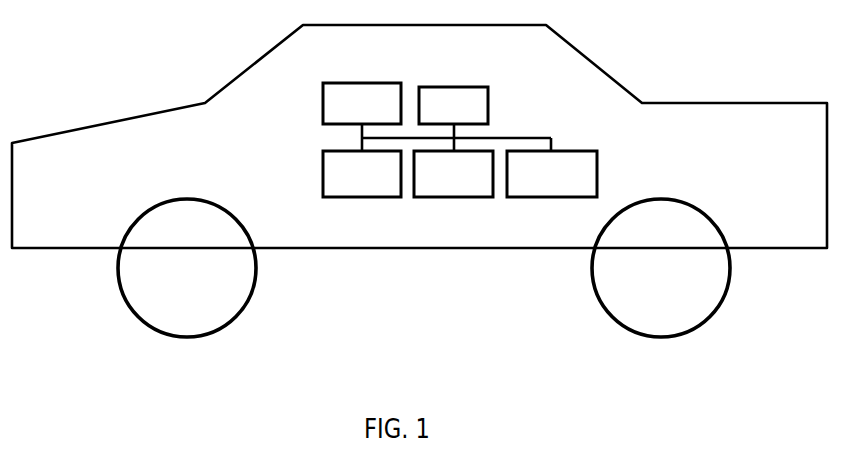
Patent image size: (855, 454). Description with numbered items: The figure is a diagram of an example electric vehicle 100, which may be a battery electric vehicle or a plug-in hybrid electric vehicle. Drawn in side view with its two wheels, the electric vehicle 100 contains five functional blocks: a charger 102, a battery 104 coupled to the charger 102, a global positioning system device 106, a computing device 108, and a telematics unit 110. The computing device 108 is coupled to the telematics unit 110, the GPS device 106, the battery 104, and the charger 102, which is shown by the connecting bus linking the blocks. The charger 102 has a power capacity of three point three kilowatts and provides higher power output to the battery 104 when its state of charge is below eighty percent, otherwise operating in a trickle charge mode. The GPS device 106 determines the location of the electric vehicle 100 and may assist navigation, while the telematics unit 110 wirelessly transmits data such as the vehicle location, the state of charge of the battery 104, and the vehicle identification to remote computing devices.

The electric vehicle 100 is at (103, 83).
The charger 102 is at (552, 174).
The battery 104 is at (453, 174).
The global positioning system device 106 is at (362, 174).
The computing device 108 is at (362, 103).
The telematics unit 110 is at (453, 105).